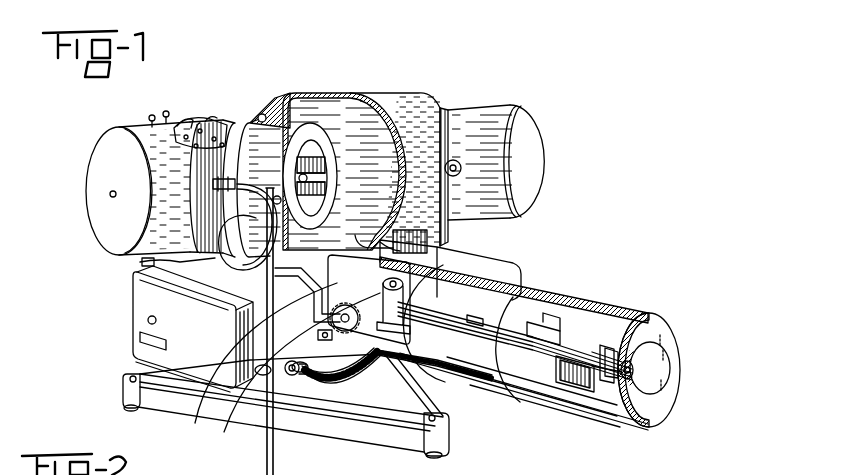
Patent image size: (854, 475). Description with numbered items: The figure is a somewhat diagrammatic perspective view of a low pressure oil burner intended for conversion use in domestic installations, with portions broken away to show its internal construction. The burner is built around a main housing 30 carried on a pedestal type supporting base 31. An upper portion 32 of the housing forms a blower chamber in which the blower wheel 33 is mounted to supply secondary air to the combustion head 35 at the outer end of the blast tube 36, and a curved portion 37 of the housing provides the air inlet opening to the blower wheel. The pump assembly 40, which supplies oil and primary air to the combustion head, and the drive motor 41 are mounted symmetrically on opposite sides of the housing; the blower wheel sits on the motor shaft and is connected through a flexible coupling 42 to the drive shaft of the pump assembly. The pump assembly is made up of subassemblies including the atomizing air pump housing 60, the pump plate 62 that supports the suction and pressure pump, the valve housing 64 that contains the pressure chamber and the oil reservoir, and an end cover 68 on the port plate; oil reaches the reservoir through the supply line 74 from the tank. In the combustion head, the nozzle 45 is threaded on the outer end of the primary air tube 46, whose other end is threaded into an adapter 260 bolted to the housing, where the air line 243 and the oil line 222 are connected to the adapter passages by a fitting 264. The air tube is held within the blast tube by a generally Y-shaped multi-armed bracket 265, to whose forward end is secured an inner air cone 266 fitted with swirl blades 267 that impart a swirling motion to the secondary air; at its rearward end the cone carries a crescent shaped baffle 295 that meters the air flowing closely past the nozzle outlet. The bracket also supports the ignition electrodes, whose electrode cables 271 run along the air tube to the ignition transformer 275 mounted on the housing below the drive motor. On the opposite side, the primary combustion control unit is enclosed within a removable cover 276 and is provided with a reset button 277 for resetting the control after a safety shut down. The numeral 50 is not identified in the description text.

The main housing 30 is at (440, 238).
The pedestal type supporting base 31 is at (367, 430).
The upper portion 32 is at (410, 108).
The blower wheel 33 is at (352, 130).
The combustion head 35 is at (645, 367).
The blast tube 36 is at (609, 306).
The curved portion 37 is at (306, 148).
The pump assembly 40 is at (150, 112).
The drive motor 41 is at (545, 153).
The flexible coupling 42 is at (305, 162).
The nozzle 45 is at (662, 390).
The primary air tube 46 is at (498, 372).
The bracket 50 is at (272, 100).
The atomizing air pump housing 60 is at (241, 127).
The pump plate 62 is at (186, 120).
The valve housing 64 is at (140, 262).
The end cover 68 is at (97, 203).
The supply line 74 is at (274, 450).
The oil line 222 is at (291, 380).
The air line 243 is at (249, 365).
The adapter 260 is at (415, 368).
The fitting 264 is at (391, 352).
The multi-armed bracket 265 is at (545, 382).
The inner air cone 266 is at (657, 413).
The swirl blades 267 is at (600, 418).
The electrode cables 271 is at (535, 290).
The ignition transformer 275 is at (490, 268).
The removable cover 276 is at (132, 302).
The reset button 277 is at (148, 322).
The crescent shaped baffle 295 is at (578, 392).